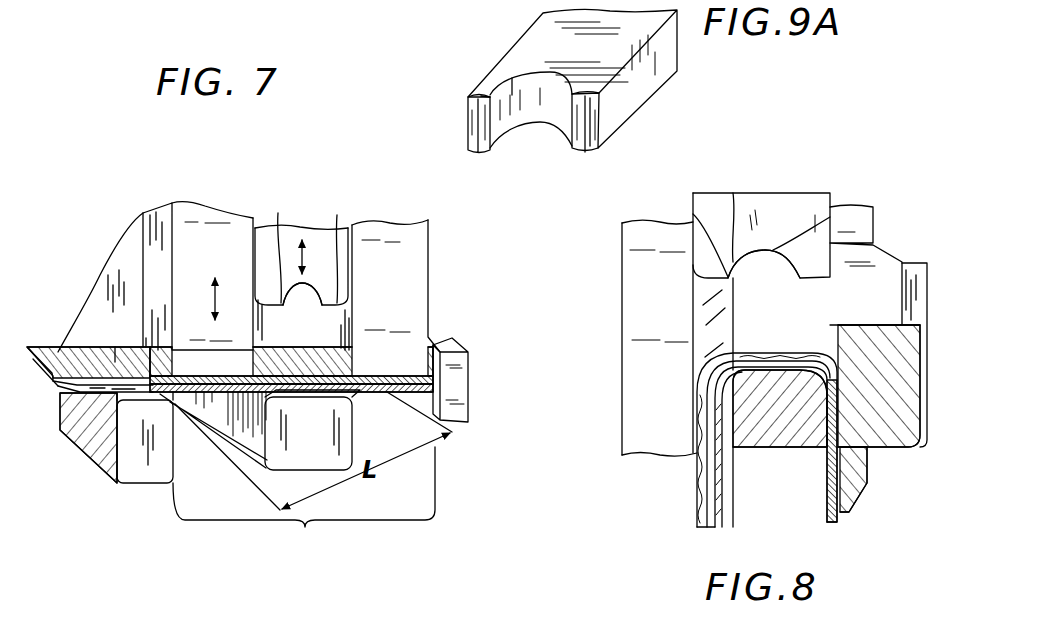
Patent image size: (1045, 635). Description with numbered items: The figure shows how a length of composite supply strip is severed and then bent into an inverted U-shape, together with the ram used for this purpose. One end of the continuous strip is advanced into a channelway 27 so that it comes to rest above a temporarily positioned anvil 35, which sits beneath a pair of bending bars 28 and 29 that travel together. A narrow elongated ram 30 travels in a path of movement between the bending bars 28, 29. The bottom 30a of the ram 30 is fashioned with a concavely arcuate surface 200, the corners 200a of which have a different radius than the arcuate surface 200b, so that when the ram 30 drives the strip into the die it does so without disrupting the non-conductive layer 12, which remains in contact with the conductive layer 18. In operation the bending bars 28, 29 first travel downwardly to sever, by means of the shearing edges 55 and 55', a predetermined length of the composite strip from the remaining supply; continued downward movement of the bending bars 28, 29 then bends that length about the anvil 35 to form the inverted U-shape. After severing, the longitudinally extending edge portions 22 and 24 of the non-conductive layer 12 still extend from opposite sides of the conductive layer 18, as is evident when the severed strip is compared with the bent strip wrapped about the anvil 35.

In FIG. 8, the non-conductive layer 12 is at (785, 358).
In FIG. 7, the conductive layer 18 is at (55, 384).
In FIG. 8, the conductive layer 18 is at (723, 520).
In FIG. 7, the edge portion 22 is at (22, 348).
In FIG. 7, the edge portion 24 is at (60, 395).
In FIG. 7, the channelway 27 is at (304, 501).
In FIG. 7, the bending bar 28 is at (198, 210).
In FIG. 8, the bending bar 28 is at (630, 388).
In FIG. 7, the bending bar 29 is at (412, 266).
In FIG. 8, the bending bar 29 is at (885, 265).
In FIG. 7, the ram 30 is at (297, 232).
In FIG. 9A, the ram 30 is at (613, 82).
In FIG. 8, the ram 30 is at (787, 215).
In FIG. 7, the bottom of the ram 30a is at (300, 295).
In FIG. 9A, the bottom of the ram 30a is at (548, 144).
In FIG. 8, the bottom of the ram 30a is at (762, 268).
In FIG. 7, the anvil 35 is at (337, 437).
In FIG. 8, the anvil 35 is at (768, 438).
In FIG. 7, the shearing edge 55 is at (97, 338).
In FIG. 7, the shearing edge 55' is at (213, 436).
In FIG. 7, the concavely arcuate surface 200 is at (298, 283).
In FIG. 9A, the concavely arcuate surface 200 is at (547, 84).
In FIG. 8, the concavely arcuate surface 200 is at (808, 240).
In FIG. 7, the corners of the arcuate surface 200a is at (337, 215).
In FIG. 9A, the corners of the arcuate surface 200a is at (481, 96).
In FIG. 8, the corners of the arcuate surface 200a is at (693, 214).
In FIG. 7, the arcuate surface 200b is at (280, 208).
In FIG. 9A, the arcuate surface 200b is at (512, 78).
In FIG. 8, the arcuate surface 200b is at (733, 193).